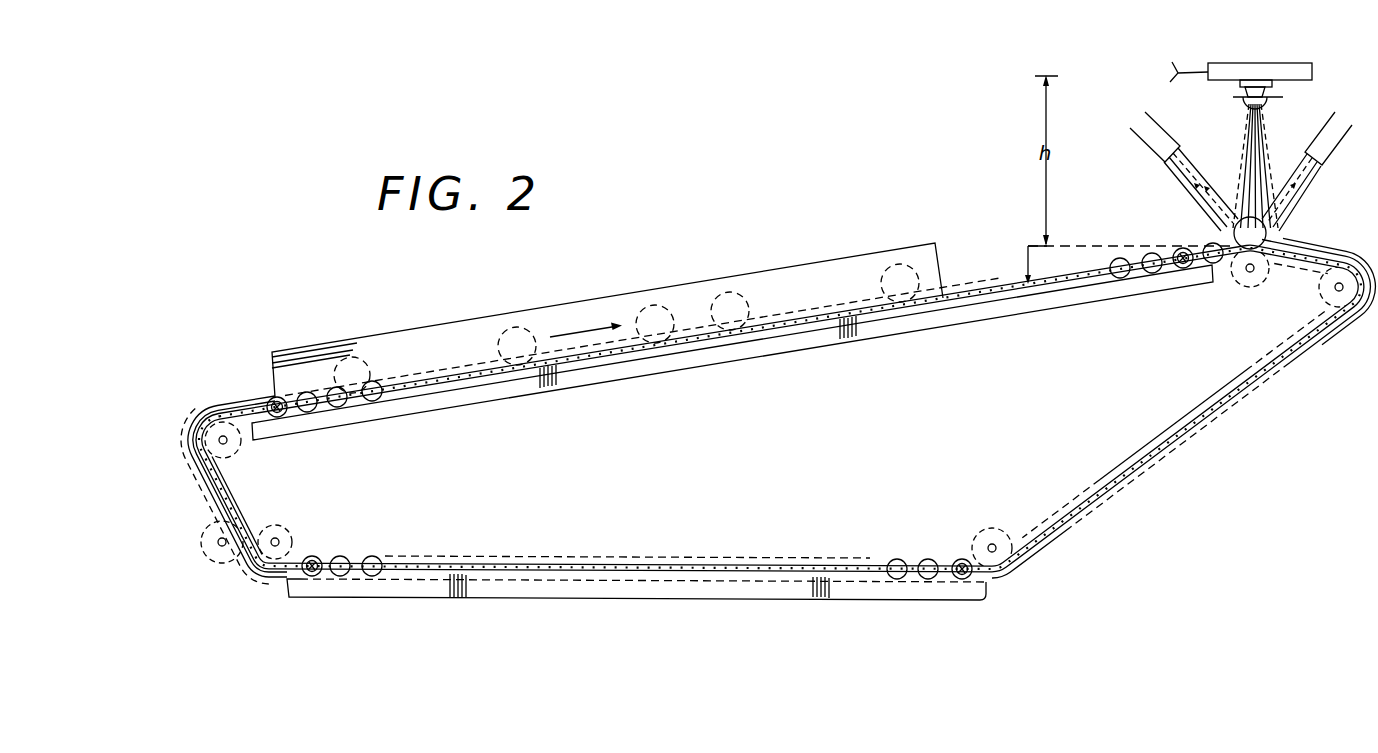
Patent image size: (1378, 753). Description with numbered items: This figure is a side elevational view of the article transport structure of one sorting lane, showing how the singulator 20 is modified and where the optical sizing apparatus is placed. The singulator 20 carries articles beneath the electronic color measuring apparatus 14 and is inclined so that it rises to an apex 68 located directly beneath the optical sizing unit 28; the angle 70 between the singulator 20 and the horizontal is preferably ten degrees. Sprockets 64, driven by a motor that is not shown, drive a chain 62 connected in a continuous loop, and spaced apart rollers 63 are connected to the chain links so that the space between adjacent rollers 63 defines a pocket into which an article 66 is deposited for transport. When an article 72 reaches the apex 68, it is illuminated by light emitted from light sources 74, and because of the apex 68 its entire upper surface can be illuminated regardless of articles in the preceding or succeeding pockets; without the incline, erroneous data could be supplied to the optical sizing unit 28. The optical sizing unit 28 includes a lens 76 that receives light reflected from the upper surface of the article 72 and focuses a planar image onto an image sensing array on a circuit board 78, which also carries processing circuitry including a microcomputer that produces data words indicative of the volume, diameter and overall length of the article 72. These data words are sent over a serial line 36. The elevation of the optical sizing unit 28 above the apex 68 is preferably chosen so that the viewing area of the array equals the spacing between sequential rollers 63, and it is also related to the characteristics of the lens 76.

The electronic color measuring apparatus 14 is at (768, 270).
The singulator 20 is at (240, 402).
The optical sizing unit 28 is at (1236, 135).
The serial line 36 is at (1178, 73).
The chain 62 is at (228, 500).
The rollers 63 is at (338, 407).
The sprockets 64 is at (290, 541).
The article 66 is at (540, 334).
The apex 68 is at (1270, 240).
The angle 70 is at (1027, 262).
The article 72 is at (1230, 234).
The light sources 74 is at (1152, 150).
The lens 76 is at (1235, 95).
The circuit board 78 is at (1258, 63).